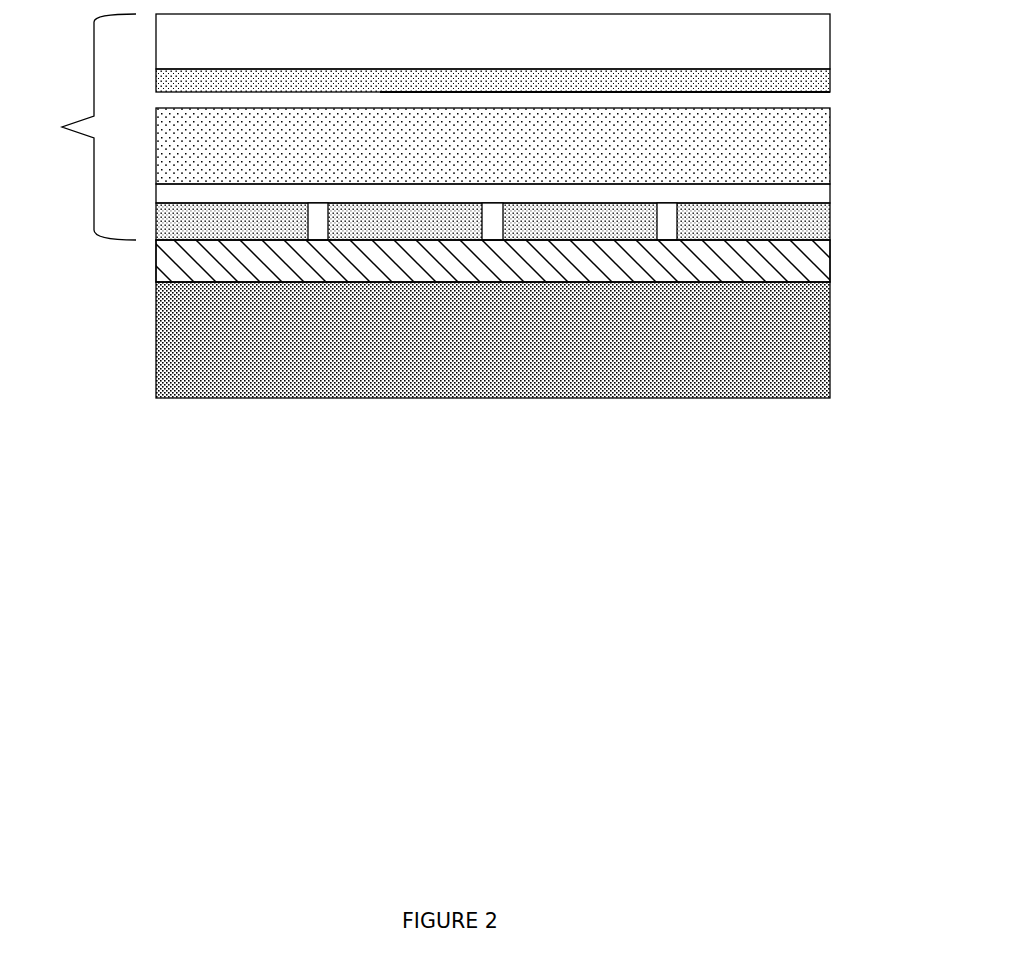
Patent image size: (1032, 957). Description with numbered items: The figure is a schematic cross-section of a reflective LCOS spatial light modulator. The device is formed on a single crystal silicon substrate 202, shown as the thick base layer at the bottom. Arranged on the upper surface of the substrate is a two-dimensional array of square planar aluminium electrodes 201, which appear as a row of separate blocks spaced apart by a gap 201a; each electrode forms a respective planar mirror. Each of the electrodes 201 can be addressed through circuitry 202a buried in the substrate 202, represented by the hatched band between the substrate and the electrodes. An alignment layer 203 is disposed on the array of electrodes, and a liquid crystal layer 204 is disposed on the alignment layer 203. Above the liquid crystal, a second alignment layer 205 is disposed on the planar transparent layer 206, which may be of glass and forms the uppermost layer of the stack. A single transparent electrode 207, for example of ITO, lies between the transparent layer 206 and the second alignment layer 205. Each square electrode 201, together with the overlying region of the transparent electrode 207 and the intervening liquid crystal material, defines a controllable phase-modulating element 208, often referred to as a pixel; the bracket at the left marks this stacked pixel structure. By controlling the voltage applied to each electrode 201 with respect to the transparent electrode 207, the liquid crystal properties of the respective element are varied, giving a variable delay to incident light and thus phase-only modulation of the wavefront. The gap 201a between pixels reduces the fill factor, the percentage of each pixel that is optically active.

The square planar aluminium electrodes 201 is at (800, 213).
The gap 201a is at (662, 220).
The single crystal silicon substrate 202 is at (156, 357).
The circuitry 202a is at (156, 264).
The alignment layer 203 is at (808, 193).
The liquid crystal layer 204 is at (808, 143).
The second alignment layer 205 is at (810, 100).
The planar transparent layer 206 is at (800, 40).
The transparent electrode 207 is at (807, 83).
The phase-modulating element 208 is at (77, 127).